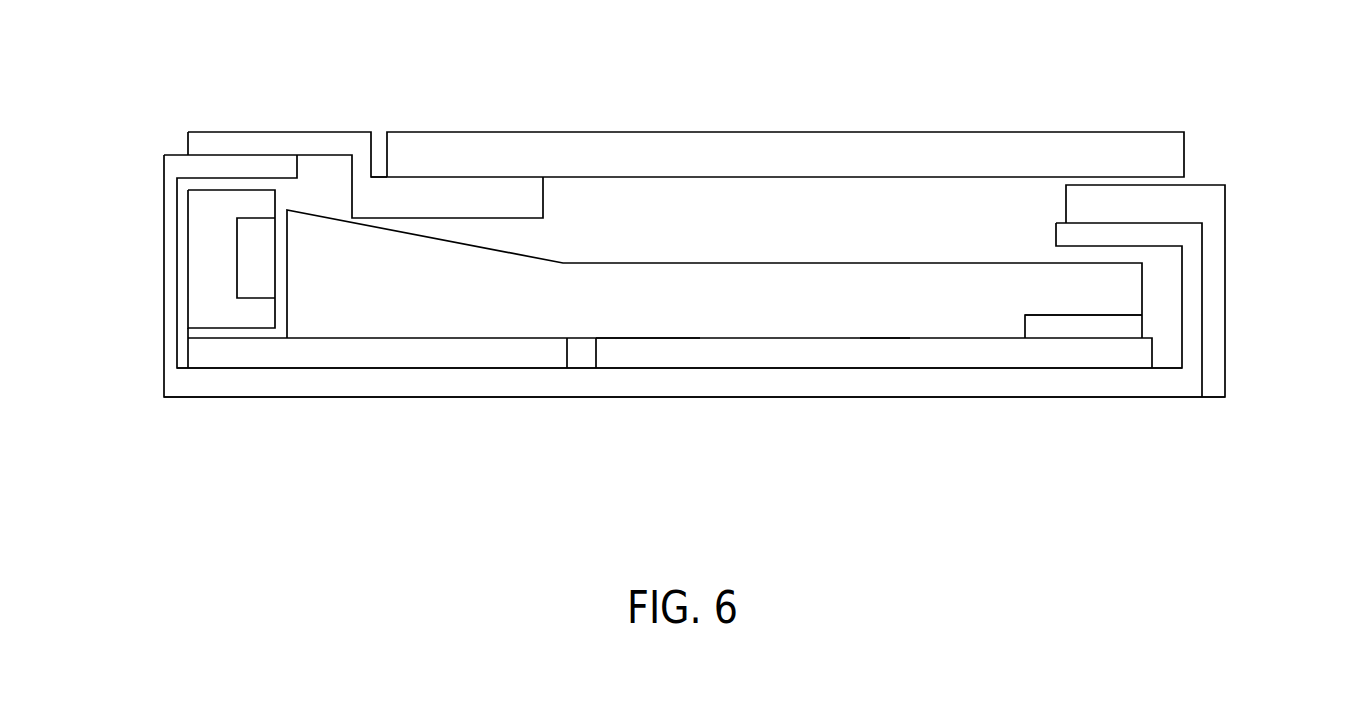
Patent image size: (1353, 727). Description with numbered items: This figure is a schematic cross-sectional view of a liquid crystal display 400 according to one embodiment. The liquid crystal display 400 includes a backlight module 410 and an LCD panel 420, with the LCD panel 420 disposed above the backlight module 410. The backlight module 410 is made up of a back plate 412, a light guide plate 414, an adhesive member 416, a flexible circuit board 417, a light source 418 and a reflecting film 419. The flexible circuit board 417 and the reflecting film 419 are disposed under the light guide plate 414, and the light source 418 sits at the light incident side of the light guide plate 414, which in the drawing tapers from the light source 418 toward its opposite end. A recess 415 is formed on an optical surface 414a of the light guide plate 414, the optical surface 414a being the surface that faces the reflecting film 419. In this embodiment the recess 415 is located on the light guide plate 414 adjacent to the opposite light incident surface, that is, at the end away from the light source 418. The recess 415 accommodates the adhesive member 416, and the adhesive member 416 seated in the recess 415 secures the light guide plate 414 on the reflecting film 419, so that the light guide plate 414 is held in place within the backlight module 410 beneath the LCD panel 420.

The liquid crystal display 400 is at (157, 51).
The backlight module 410 is at (1253, 228).
The back plate 412 is at (200, 380).
The light guide plate 414 is at (760, 310).
The optical surface 414a is at (885, 338).
The recess 415 is at (1088, 322).
The adhesive member 416 is at (1085, 332).
The flexible circuit board 417 is at (458, 352).
The light source 418 is at (202, 258).
The reflecting film 419 is at (665, 355).
The LCD panel 420 is at (772, 148).